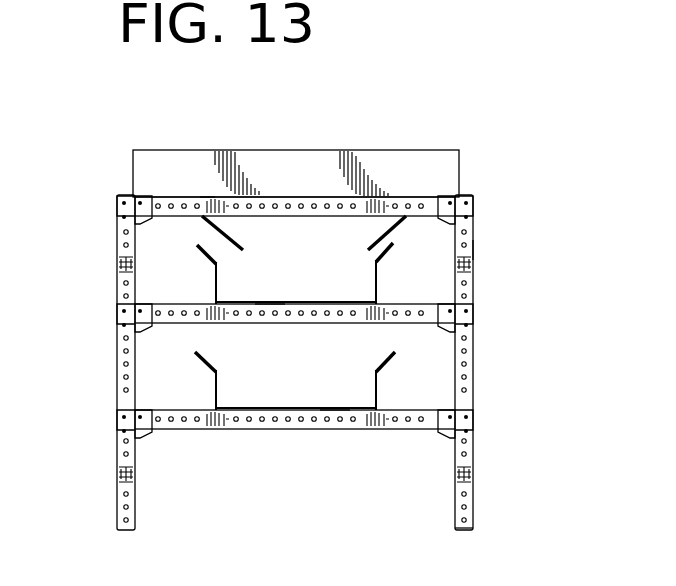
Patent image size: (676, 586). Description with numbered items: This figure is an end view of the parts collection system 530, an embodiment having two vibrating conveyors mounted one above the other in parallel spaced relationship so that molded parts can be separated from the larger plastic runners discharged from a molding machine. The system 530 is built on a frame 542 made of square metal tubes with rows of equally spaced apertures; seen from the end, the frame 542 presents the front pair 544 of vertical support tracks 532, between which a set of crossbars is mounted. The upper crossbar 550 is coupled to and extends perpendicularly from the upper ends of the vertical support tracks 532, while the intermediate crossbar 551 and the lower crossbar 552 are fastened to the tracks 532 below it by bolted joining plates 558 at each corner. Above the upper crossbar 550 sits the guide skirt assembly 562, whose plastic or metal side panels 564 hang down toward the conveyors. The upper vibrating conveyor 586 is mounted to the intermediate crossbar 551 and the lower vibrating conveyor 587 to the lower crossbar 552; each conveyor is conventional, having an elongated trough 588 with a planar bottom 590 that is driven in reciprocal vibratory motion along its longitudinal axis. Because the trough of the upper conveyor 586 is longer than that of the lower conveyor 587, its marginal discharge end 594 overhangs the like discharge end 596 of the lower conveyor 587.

The parts collection system 530 is at (100, 142).
The vertical support tracks 532 is at (117, 470).
The frame 542 is at (492, 258).
The front pair of vertical support tracks 544 is at (482, 546).
The upper crossbar 550 is at (204, 196).
The intermediate crossbar 551 is at (127, 291).
The lower crossbar 552 is at (190, 430).
The bolted joining plates 558 is at (128, 200).
The guide skirt assembly 562 is at (420, 145).
The side panels 564 is at (205, 243).
The upper vibrating conveyor 586 is at (378, 292).
The lower vibrating conveyor 587 is at (210, 393).
The elongated trough 588 is at (220, 283).
The planar bottom 590 is at (300, 270).
The marginal discharge end of the upper conveyor 594 is at (268, 322).
The discharge end of the lower conveyor 596 is at (334, 408).